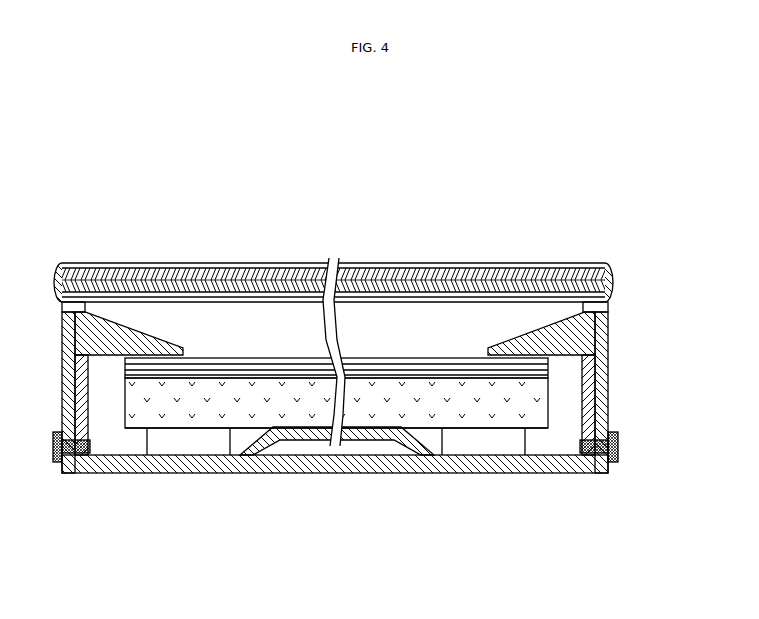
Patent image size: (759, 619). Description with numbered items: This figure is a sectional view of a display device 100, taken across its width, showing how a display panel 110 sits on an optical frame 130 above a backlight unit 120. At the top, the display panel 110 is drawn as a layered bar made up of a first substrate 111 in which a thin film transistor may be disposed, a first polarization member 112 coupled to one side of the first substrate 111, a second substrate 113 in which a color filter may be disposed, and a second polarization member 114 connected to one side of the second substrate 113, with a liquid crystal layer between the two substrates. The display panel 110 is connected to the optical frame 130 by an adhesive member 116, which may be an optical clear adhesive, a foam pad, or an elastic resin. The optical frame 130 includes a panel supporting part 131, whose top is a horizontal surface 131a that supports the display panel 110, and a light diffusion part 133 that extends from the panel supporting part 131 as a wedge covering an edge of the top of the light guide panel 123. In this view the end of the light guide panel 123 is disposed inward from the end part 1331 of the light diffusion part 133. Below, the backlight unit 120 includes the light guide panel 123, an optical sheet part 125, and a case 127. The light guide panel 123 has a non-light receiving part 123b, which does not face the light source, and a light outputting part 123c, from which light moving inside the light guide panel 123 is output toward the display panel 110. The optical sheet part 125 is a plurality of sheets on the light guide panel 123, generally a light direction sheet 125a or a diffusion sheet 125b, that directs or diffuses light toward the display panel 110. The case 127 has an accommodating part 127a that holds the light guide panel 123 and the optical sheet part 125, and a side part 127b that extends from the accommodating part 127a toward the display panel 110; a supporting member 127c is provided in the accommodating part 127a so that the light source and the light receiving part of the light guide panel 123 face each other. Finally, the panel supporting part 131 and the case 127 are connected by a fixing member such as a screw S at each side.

The display device 100 is at (86, 189).
The display panel 110 is at (367, 216).
The first substrate 111 is at (368, 268).
The first polarization member 112 is at (440, 287).
The second substrate 113 is at (406, 276).
The second polarization member 114 is at (473, 273).
The adhesive member 116 is at (600, 270).
The optical frame 130 is at (672, 322).
The panel supporting part 131 is at (603, 392).
The horizontal surface 131a is at (607, 310).
The light diffusion part 133 is at (597, 345).
The end part of the light diffusion part 1331 is at (183, 350).
The backlight unit 120 is at (552, 565).
The light guide panel 123 is at (320, 527).
The non-light receiving part 123b is at (123, 408).
The light outputting part 123c is at (240, 442).
The optical sheet part 125 is at (442, 527).
The light direction sheet 125a is at (388, 372).
The diffusion sheet 125b is at (417, 372).
The case 127 is at (517, 527).
The accommodating part 127a is at (528, 442).
The side part 127b is at (582, 410).
The supporting member 127c is at (477, 442).
The screw S is at (53, 441).